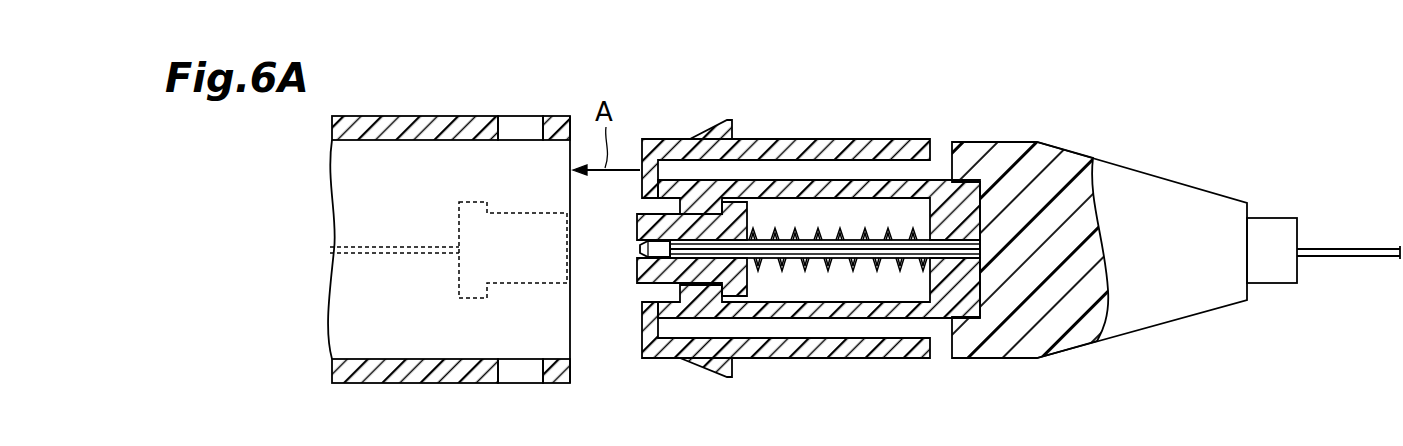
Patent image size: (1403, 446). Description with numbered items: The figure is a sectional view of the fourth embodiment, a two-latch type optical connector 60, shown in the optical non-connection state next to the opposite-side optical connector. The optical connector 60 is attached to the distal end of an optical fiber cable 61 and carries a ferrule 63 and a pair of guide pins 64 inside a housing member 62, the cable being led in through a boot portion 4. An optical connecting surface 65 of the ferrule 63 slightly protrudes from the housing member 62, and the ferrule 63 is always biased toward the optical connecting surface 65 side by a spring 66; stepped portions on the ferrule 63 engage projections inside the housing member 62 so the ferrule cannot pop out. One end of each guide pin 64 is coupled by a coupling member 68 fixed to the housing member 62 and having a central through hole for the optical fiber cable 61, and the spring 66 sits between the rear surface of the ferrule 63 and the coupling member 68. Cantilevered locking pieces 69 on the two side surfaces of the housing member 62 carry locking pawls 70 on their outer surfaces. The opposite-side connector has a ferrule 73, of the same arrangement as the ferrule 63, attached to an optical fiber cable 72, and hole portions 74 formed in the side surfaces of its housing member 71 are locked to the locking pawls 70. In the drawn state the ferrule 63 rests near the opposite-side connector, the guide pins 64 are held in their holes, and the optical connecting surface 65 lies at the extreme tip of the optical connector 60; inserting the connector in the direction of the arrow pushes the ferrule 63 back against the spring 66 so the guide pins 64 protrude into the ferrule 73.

The boot portion 4 is at (1152, 318).
The optical connector 60 is at (1200, 150).
The optical fiber cable 61 is at (1335, 255).
The housing member 62 is at (940, 180).
The ferrule 63 is at (672, 263).
The guide pins 64 is at (868, 252).
The optical connecting surface 65 is at (637, 223).
The spring 66 is at (825, 270).
The coupling member 68 is at (952, 290).
The locking pieces 69 is at (900, 139).
The locking pawls 70 is at (727, 120).
The housing member 71 is at (448, 116).
The optical fiber cable 72 is at (352, 255).
The ferrule 73 is at (477, 285).
The hole portions 74 is at (500, 138).